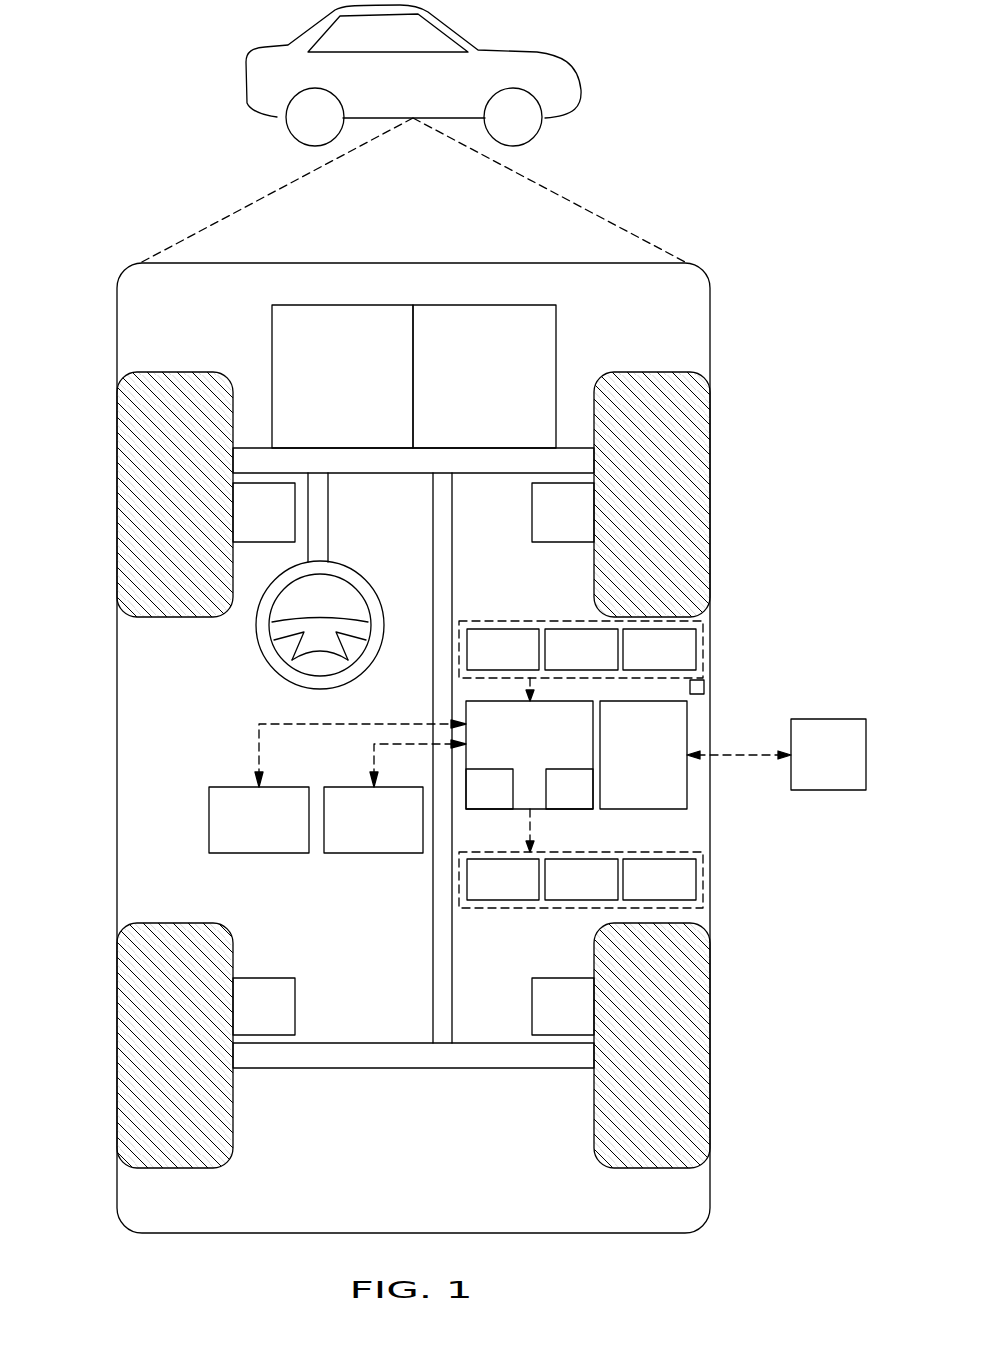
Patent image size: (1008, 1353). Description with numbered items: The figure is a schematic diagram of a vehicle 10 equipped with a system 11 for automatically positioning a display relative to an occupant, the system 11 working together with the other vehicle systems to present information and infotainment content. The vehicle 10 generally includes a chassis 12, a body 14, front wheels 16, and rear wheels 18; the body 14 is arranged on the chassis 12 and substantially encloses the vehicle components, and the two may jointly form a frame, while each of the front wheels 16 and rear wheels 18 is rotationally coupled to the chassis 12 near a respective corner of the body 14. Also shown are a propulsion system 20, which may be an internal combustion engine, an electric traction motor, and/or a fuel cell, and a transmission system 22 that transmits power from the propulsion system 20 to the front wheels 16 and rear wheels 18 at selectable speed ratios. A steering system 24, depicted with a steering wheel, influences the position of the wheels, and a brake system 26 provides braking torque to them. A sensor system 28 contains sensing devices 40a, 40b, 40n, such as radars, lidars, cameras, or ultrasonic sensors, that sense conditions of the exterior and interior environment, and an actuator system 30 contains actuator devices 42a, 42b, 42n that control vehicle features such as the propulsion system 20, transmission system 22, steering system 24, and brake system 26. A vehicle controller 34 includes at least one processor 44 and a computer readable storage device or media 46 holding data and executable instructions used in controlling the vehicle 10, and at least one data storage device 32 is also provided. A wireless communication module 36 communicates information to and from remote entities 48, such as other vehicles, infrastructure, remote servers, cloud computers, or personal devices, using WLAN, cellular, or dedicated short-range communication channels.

The vehicle 10 is at (400, 95).
The system 11 is at (246, 832).
The chassis 12 is at (433, 951).
The body 14 is at (117, 748).
The front wheels 16 is at (175, 372).
The rear wheels 18 is at (175, 1168).
The propulsion system 20 is at (329, 390).
The transmission system 22 is at (471, 390).
The steering system 24 is at (342, 507).
The brake system 26 is at (251, 525).
The sensor system 28 is at (581, 636).
The actuator system 30 is at (581, 880).
The data storage device 32 is at (361, 832).
The vehicle controller 34 is at (529, 755).
The wireless communication module 36 is at (630, 767).
The sensing device 40a is at (482, 662).
The sensing device 40b is at (560, 662).
The sensing device 40n is at (638, 662).
The actuator device 42a is at (482, 892).
The actuator device 42b is at (560, 892).
The actuator device 42n is at (638, 892).
The processor 44 is at (476, 802).
The computer readable storage device or media 46 is at (556, 802).
The remote entities 48 is at (815, 767).